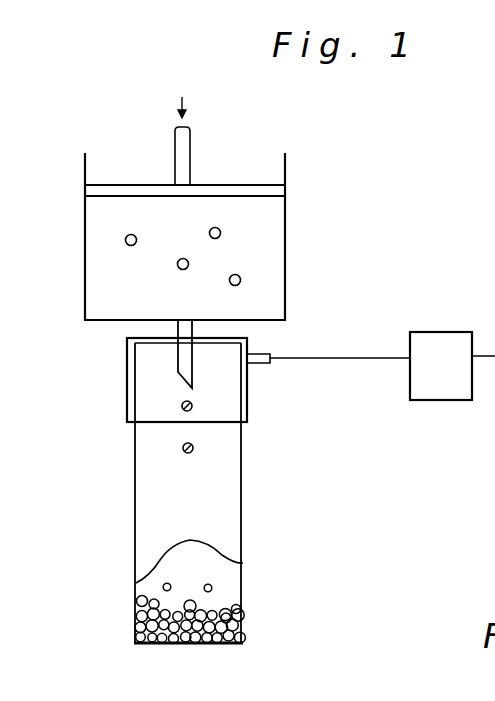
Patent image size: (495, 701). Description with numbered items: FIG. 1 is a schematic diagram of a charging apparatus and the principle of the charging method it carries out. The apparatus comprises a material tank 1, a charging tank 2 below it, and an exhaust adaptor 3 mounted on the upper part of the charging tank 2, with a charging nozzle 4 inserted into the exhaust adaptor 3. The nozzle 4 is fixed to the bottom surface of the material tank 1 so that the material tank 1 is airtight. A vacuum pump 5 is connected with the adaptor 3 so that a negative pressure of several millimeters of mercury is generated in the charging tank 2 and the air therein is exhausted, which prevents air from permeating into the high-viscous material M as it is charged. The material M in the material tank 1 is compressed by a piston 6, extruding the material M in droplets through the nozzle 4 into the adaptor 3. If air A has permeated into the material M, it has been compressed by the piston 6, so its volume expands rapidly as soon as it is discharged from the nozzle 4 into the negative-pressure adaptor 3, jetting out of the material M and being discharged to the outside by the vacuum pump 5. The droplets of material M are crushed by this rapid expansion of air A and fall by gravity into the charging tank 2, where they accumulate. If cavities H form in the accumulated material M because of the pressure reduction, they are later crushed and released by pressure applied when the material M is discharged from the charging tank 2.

The material tank 1 is at (85, 292).
The charging tank 2 is at (242, 515).
The exhaust adaptor 3 is at (247, 407).
The charging nozzle 4 is at (180, 368).
The vacuum pump 5 is at (453, 398).
The piston 6 is at (277, 189).
The air A is at (221, 233).
The high-viscous material M is at (272, 282).
The cavities H is at (136, 636).